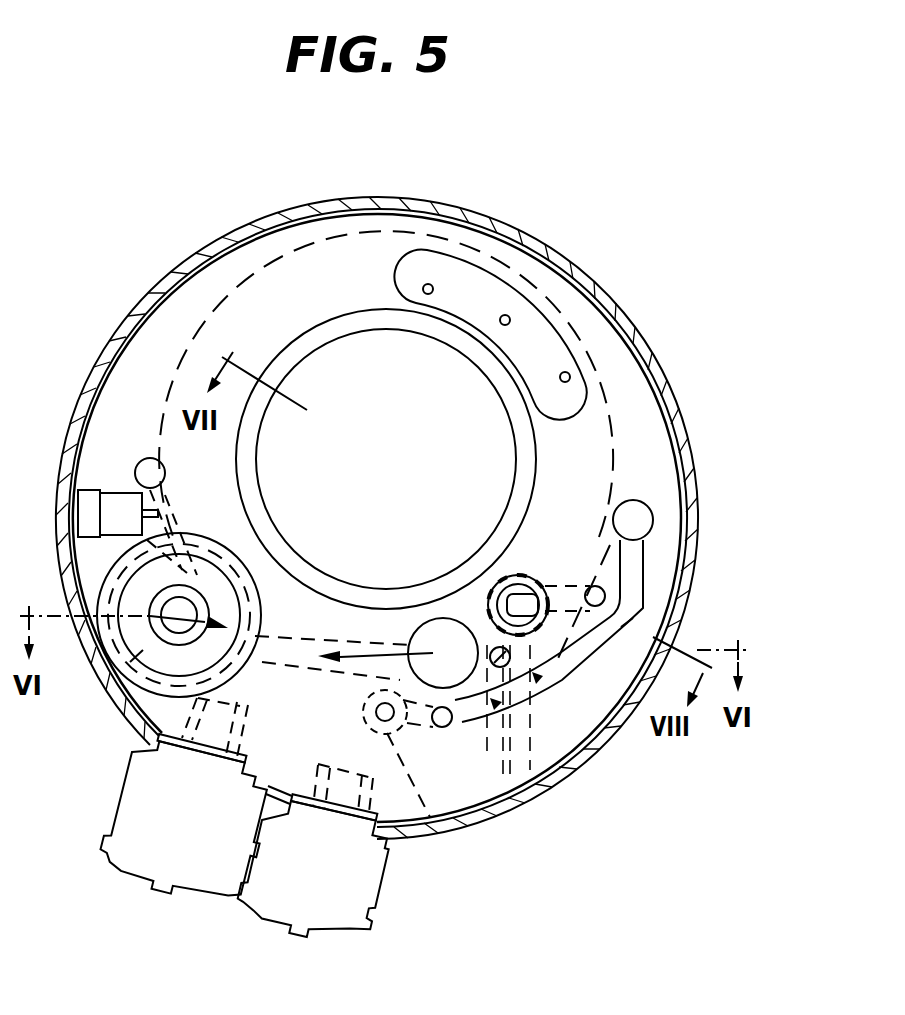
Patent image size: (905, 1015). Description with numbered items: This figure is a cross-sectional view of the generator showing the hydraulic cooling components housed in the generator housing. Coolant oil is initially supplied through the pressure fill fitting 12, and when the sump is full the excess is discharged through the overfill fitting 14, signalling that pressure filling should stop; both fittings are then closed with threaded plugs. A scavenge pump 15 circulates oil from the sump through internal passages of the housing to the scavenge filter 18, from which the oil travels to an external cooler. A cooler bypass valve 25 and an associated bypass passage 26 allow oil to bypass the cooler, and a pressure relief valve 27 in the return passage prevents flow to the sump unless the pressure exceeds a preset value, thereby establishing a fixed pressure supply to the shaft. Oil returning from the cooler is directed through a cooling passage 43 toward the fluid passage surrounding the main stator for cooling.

The pressure fill fitting 12 is at (125, 857).
The overfill fitting 14 is at (367, 910).
The scavenge pump 15 is at (456, 668).
The scavenge filter 18 is at (143, 650).
The cooler bypass valve 25 is at (440, 833).
The bypass passage 26 is at (630, 617).
The pressure relief valve 27 is at (522, 628).
The cooling passage 43 is at (648, 505).